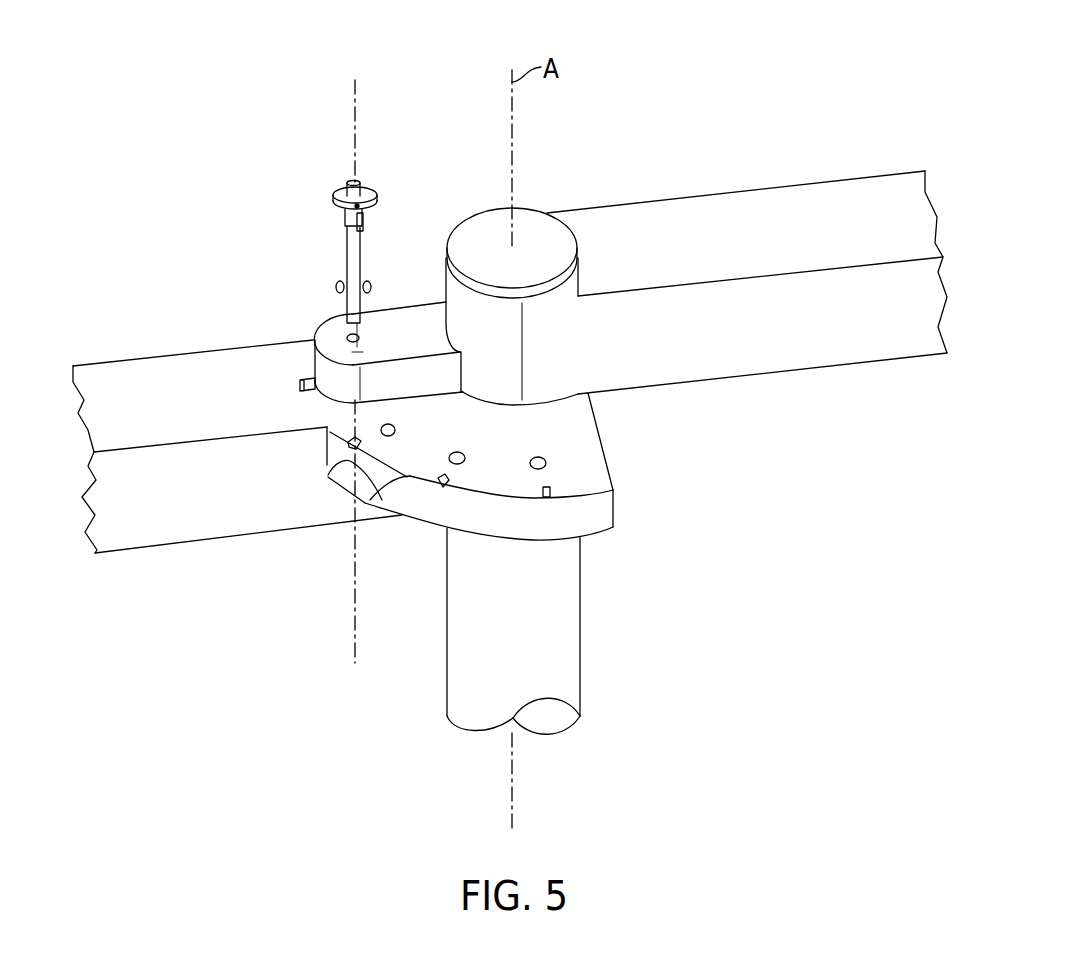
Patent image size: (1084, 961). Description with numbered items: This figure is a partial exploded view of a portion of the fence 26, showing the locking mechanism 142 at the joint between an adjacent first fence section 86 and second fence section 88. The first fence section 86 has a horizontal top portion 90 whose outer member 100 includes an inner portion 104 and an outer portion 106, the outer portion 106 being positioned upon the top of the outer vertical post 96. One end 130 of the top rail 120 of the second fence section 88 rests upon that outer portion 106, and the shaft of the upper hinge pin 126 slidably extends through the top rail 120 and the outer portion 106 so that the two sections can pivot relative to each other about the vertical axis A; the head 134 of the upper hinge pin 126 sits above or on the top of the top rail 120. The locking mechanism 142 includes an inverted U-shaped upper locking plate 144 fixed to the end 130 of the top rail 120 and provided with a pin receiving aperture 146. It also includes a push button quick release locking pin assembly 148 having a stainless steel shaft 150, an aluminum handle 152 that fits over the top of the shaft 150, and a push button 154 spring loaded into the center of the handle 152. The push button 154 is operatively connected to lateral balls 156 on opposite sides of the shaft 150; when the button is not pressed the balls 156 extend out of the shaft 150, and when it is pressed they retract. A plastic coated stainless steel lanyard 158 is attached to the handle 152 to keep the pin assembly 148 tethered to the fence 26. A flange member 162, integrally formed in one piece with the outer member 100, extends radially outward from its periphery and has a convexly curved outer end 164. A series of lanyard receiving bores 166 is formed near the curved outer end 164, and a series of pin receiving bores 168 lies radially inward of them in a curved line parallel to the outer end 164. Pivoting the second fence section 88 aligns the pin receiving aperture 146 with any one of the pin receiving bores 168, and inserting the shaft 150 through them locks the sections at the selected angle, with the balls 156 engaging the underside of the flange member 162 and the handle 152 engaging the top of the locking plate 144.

The fence 26 is at (203, 107).
The first fence section 86 is at (155, 537).
The second fence section 88 is at (747, 237).
The top portion 90 is at (135, 375).
The outer vertical post 96 is at (582, 618).
The outer member 100 is at (207, 356).
The inner portion 104 is at (104, 417).
The outer portion 106 is at (327, 430).
The top rail 120 is at (710, 190).
The upper hinge pin 126 is at (530, 261).
The end of the top rail 130 is at (497, 337).
The head of the upper hinge pin 134 is at (568, 240).
The locking mechanism 142 is at (364, 223).
The upper locking plate 144 is at (420, 317).
The pin receiving aperture 146 is at (326, 328).
The push button quick release locking pin assembly 148 is at (364, 160).
The shaft 150 is at (346, 248).
The handle 152 is at (335, 197).
The push button 154 is at (357, 180).
The lateral balls 156 is at (370, 281).
The lanyard 158 is at (362, 314).
The flange member 162 is at (610, 452).
The convexly curved outer end 164 is at (592, 508).
The lanyard receiving bores 166 is at (300, 386).
The pin receiving bores 168 is at (395, 435).